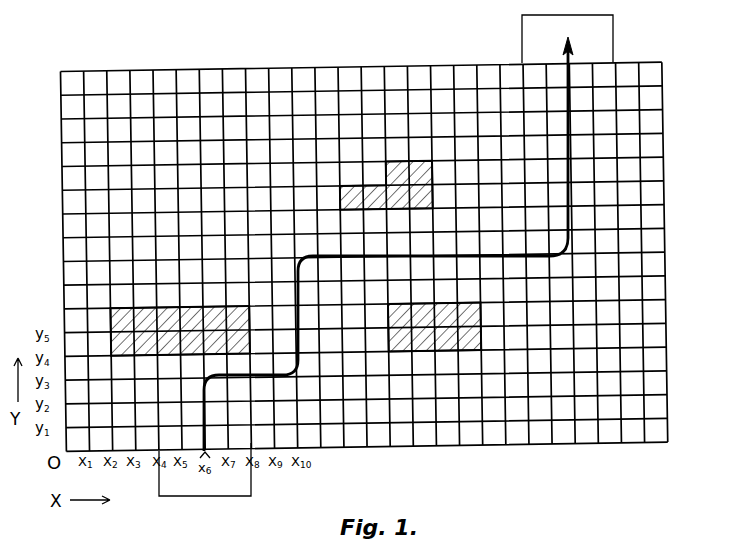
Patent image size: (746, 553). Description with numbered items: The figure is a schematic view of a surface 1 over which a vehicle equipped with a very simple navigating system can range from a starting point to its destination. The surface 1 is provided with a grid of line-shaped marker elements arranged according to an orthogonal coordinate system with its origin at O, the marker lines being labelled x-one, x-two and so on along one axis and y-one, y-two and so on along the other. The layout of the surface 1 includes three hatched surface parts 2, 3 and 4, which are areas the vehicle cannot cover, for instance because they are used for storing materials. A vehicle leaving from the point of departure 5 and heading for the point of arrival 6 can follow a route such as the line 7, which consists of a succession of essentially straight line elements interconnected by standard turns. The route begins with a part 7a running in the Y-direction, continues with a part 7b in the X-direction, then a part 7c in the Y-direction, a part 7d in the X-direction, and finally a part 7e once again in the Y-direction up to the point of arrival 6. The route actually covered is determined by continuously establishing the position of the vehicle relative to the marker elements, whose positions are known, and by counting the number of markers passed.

The surface 1 is at (675, 164).
The hatched surface part 2 is at (49, 241).
The hatched surface part 3 is at (356, 95).
The hatched surface part 4 is at (402, 286).
The point of departure 5 is at (222, 497).
The point of arrival 6 is at (607, 37).
The route line 7 is at (425, 244).
The route part in Y-direction 7a is at (204, 411).
The route part in X-direction 7b is at (262, 377).
The route part in Y-direction 7c is at (298, 318).
The route part in X-direction 7d is at (373, 257).
The route part in Y-direction 7e is at (575, 217).